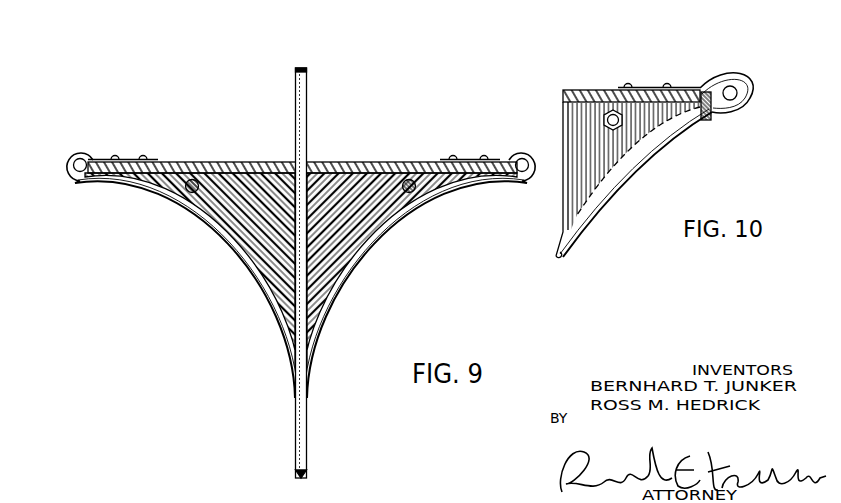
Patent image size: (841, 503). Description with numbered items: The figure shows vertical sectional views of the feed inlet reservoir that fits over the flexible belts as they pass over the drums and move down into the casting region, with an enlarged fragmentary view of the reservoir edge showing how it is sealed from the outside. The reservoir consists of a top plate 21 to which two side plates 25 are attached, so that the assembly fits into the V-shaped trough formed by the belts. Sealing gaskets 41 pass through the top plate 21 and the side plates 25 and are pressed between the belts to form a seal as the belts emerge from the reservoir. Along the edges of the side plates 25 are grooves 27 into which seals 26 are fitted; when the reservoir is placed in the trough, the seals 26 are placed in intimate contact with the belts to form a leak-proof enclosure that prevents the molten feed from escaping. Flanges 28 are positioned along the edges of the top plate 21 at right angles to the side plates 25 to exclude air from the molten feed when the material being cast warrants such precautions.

In FIG. 9, the top plate 21 is at (393, 162).
In FIG. 10, the top plate 21 is at (580, 90).
In FIG. 9, the side plates 25 is at (275, 313).
In FIG. 10, the side plates 25 is at (566, 120).
In FIG. 9, the seals 26 is at (74, 158).
In FIG. 10, the seals 26 is at (730, 72).
In FIG. 9, the grooves 27 is at (203, 218).
In FIG. 10, the grooves 27 is at (664, 136).
In FIG. 10, the flanges 28 is at (713, 116).
In FIG. 9, the sealing gaskets 41 is at (297, 130).